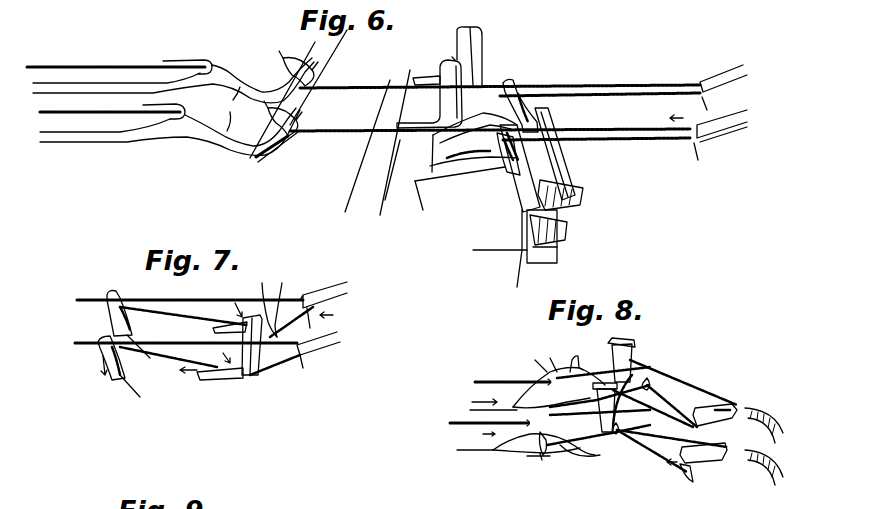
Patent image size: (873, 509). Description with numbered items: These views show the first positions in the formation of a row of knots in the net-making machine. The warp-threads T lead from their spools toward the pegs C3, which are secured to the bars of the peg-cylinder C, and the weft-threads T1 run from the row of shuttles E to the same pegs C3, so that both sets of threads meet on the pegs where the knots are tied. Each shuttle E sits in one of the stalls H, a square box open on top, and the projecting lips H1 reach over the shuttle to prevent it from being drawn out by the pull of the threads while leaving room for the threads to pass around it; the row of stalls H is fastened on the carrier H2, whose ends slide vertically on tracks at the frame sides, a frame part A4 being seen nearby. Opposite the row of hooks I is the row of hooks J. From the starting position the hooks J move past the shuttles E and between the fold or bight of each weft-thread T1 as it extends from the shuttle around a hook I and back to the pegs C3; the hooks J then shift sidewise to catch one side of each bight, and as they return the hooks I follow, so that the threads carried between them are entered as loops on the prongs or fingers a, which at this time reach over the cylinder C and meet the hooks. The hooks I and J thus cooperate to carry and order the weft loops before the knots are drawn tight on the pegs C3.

In FIG. 6, the warp-threads T is at (120, 68).
In FIG. 8, the warp-threads T is at (585, 420).
In FIG. 6, the prongs or fingers a is at (226, 109).
In FIG. 8, the prongs or fingers a is at (647, 381).
In FIG. 6, the pegs C3 is at (300, 88).
In FIG. 8, the pegs C3 is at (560, 373).
In FIG. 6, the weft-threads T1 is at (495, 112).
In FIG. 7, the weft-threads T1 is at (194, 337).
In FIG. 8, the weft-threads T1 is at (700, 394).
In FIG. 6, the peg-cylinder C is at (330, 157).
In FIG. 8, the peg-cylinder C is at (523, 442).
In FIG. 6, the frame bar A4 is at (400, 188).
In FIG. 6, the hooks J is at (428, 85).
In FIG. 7, the hooks J is at (252, 355).
In FIG. 8, the hooks J is at (598, 382).
In FIG. 6, the shuttles E is at (470, 152).
In FIG. 7, the shuttles E is at (107, 310).
In FIG. 8, the shuttles E is at (762, 418).
In FIG. 6, the stalls H is at (428, 152).
In FIG. 6, the projecting lips H1 is at (540, 190).
In FIG. 6, the carrier H2 is at (557, 253).
In FIG. 6, the hooks I is at (715, 90).
In FIG. 7, the hooks I is at (322, 325).
In FIG. 8, the hooks I is at (717, 417).